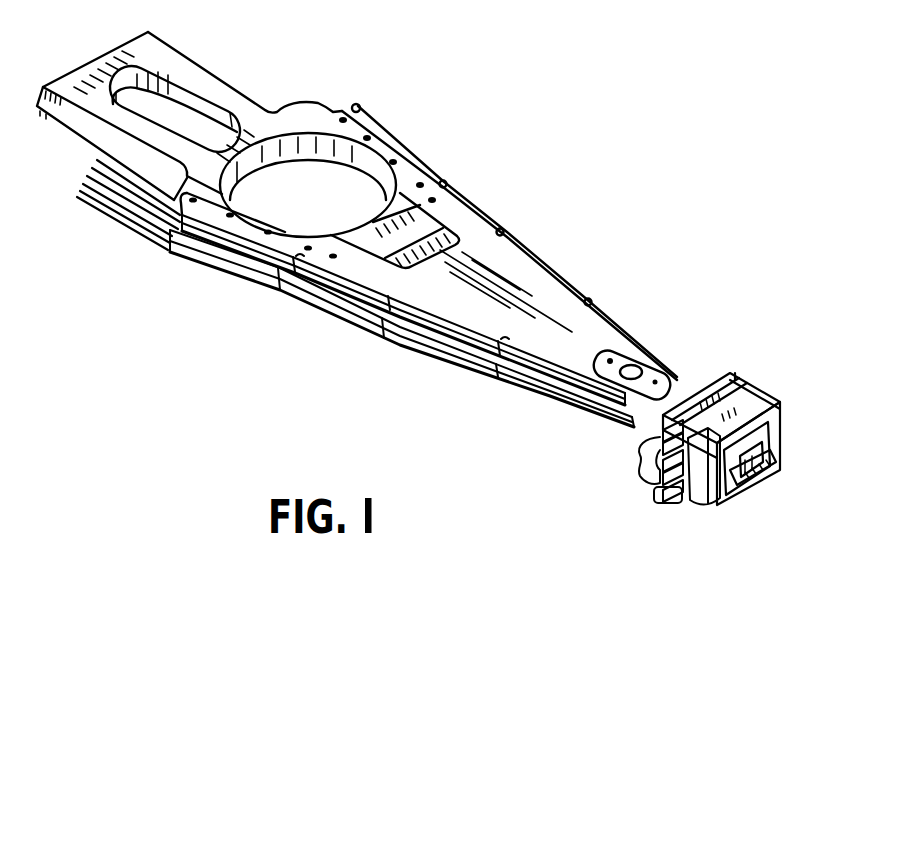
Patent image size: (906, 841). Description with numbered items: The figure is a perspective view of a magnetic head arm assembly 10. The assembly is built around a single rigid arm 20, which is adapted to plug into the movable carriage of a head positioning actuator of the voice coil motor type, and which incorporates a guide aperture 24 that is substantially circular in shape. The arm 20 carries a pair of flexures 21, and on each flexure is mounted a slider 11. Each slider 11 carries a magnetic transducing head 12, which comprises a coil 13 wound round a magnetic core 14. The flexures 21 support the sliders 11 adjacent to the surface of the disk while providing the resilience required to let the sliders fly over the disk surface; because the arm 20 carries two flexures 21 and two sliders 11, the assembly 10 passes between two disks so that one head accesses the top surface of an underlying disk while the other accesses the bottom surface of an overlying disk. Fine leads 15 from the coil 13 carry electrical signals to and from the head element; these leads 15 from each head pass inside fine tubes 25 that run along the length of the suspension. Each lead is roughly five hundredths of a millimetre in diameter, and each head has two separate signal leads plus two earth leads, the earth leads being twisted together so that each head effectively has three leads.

The magnetic head arm assembly 10 is at (518, 189).
The slider 11 is at (777, 455).
The magnetic transducing head 12 is at (686, 500).
The coil 13 is at (660, 500).
The magnetic core 14 is at (645, 472).
The fine leads 15 is at (118, 224).
The rigid arm 20 is at (221, 78).
The flexures 21 is at (478, 377).
The guide aperture 24 is at (356, 188).
The fine tubes 25 is at (327, 300).